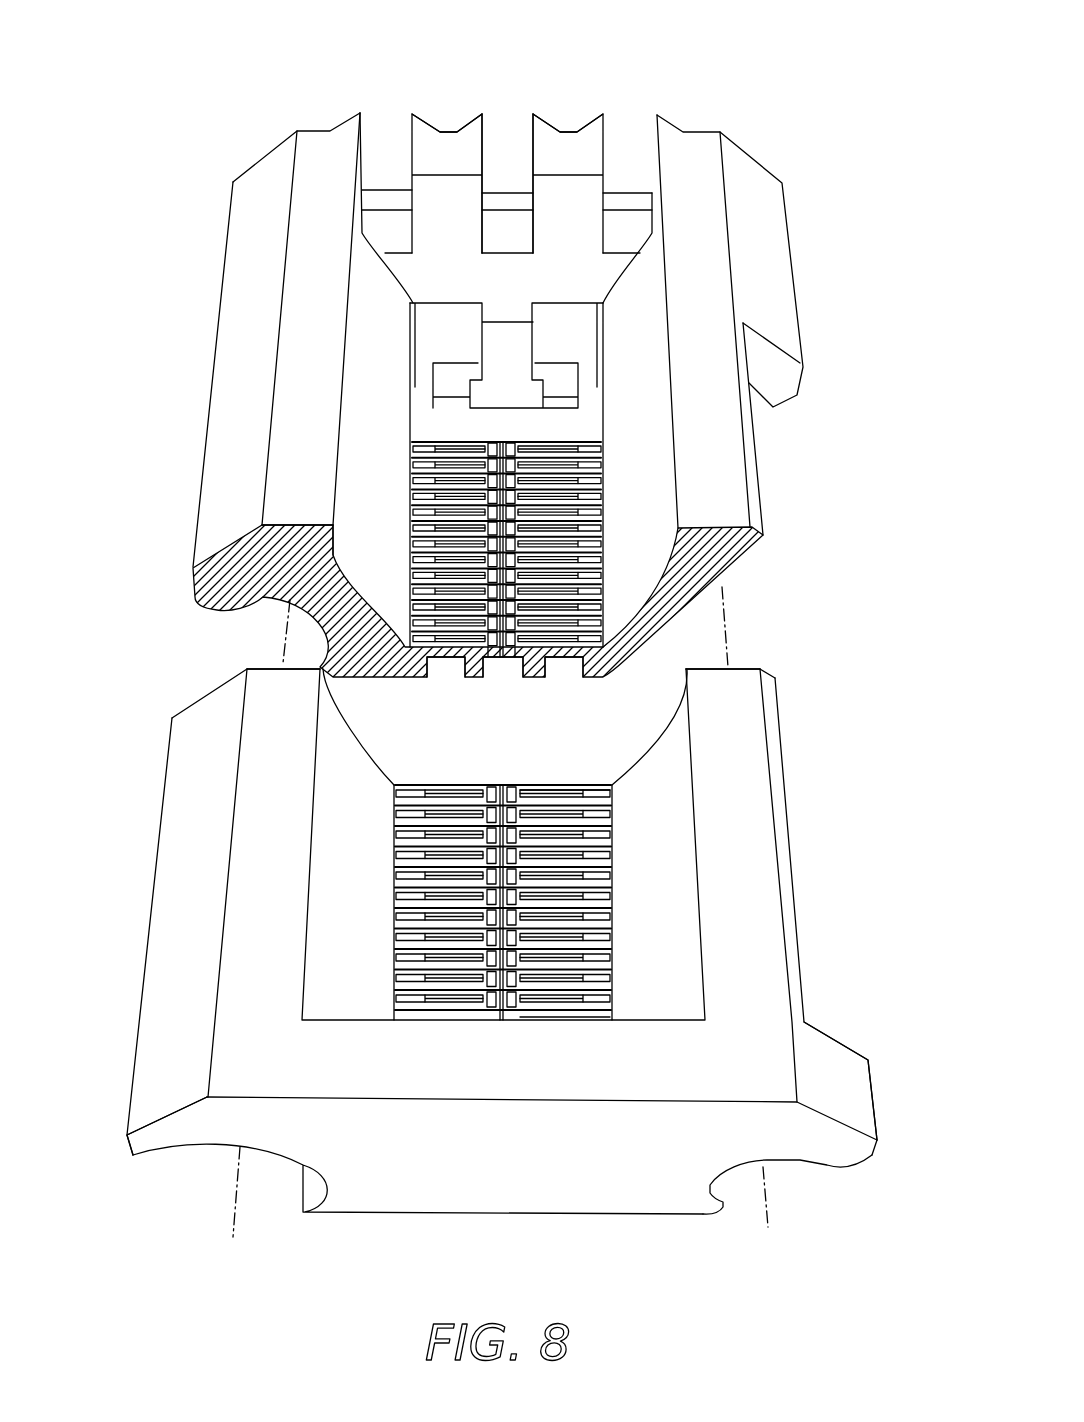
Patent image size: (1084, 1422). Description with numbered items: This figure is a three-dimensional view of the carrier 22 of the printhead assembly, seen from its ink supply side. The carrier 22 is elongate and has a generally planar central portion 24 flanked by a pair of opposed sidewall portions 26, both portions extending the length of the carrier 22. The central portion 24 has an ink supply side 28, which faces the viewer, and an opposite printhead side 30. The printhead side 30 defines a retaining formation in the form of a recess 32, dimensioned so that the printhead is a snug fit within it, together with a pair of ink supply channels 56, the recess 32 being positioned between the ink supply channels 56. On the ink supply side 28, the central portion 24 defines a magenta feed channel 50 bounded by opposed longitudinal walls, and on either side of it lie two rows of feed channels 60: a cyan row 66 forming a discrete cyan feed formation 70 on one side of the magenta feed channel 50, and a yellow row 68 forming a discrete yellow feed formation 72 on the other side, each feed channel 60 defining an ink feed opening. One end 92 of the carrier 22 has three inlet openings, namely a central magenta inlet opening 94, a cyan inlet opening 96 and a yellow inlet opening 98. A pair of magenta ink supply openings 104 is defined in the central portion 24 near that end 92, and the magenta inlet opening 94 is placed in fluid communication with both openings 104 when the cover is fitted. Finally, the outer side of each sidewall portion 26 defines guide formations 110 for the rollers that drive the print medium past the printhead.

The carrier 22 is at (782, 893).
The central portion 24 is at (395, 965).
The sidewall portions 26 is at (178, 867).
The ink supply side 28 is at (637, 503).
The printhead side 30 is at (388, 680).
The recess 32 is at (502, 672).
The magenta feed channel 50 is at (486, 490).
The ink supply channels 56 is at (445, 672).
The feed channels 60 is at (393, 430).
The cyan row 66 is at (425, 433).
The yellow row 68 is at (575, 433).
The cyan feed formation 70 is at (393, 518).
The yellow feed formation 72 is at (622, 840).
The end of the carrier 92 is at (750, 150).
The magenta inlet opening 94 is at (505, 117).
The cyan inlet opening 96 is at (383, 117).
The yellow inlet opening 98 is at (627, 117).
The magenta ink supply openings 104 is at (453, 382).
The guide formations 110 is at (185, 1132).